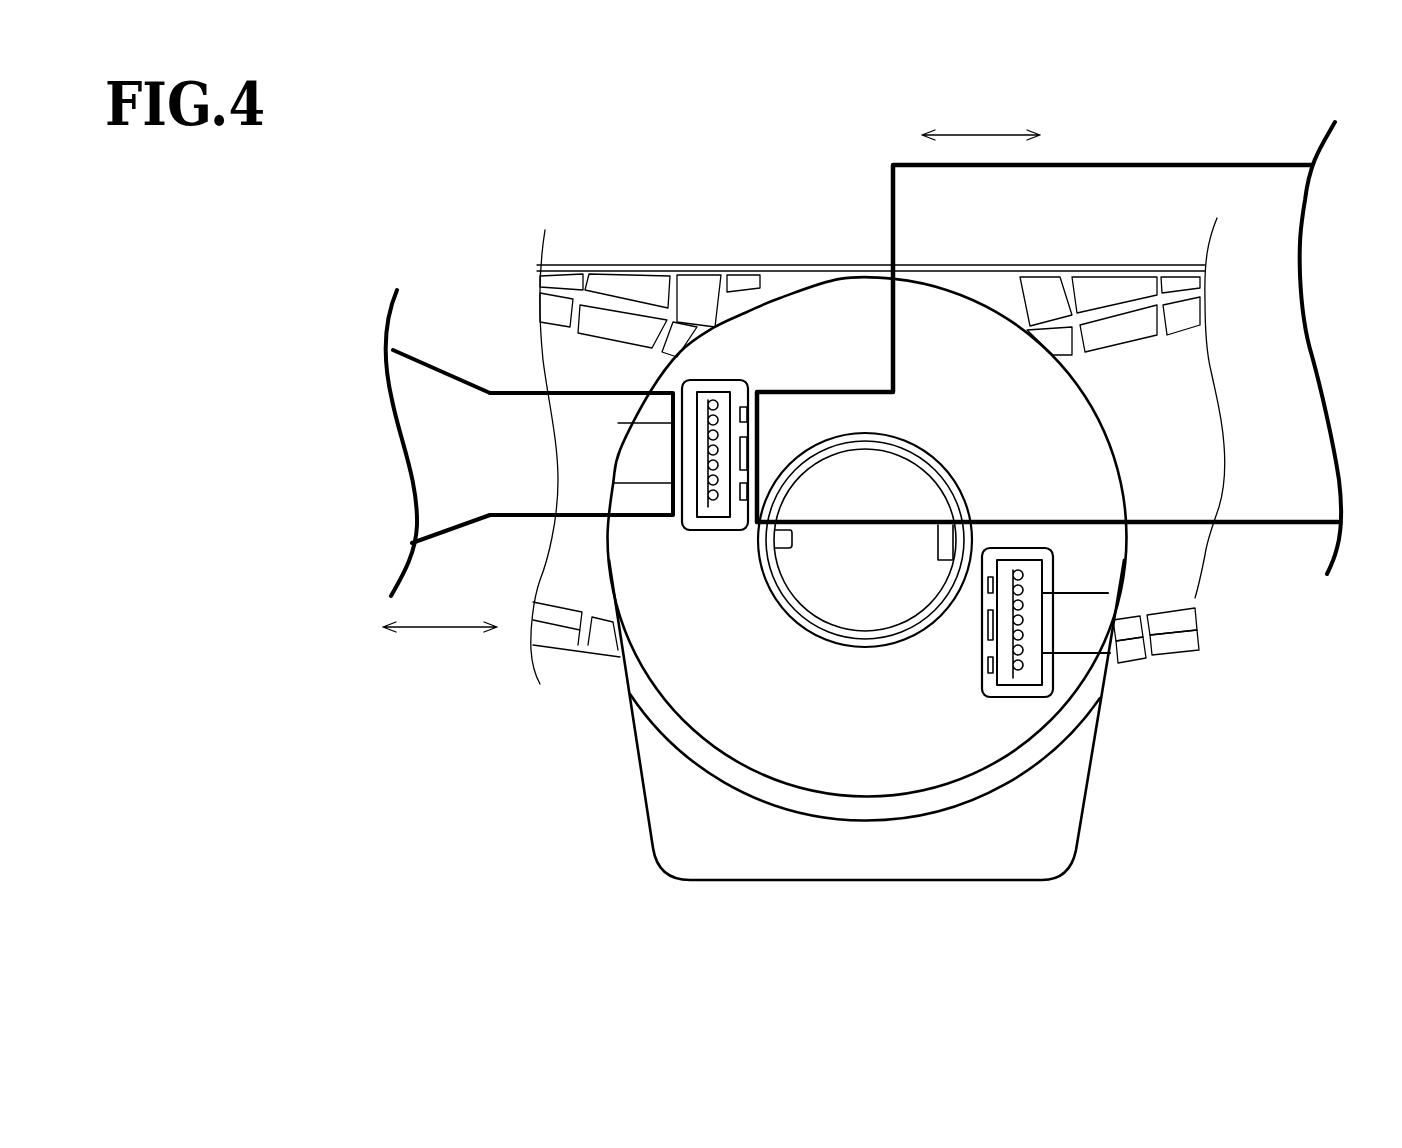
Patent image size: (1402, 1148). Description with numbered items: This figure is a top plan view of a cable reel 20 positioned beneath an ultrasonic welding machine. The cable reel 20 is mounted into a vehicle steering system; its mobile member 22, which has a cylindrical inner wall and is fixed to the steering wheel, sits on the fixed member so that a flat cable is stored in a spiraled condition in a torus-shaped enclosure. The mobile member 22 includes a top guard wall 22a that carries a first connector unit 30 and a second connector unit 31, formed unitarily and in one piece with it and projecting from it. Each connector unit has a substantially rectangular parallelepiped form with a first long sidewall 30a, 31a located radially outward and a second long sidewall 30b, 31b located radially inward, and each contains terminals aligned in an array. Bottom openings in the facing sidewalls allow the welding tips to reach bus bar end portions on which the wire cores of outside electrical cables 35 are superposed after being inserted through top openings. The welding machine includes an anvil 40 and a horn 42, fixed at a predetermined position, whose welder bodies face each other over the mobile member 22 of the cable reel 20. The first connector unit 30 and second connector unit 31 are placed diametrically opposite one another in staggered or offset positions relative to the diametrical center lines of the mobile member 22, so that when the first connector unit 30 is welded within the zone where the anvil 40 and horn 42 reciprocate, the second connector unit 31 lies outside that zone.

The cable reel 20 is at (1100, 778).
The mobile member 22 is at (718, 782).
The top guard wall 22a is at (690, 680).
The first connector unit 30 is at (1110, 766).
The first long sidewall 30a is at (1150, 618).
The second long sidewall 30b is at (980, 694).
The second connector unit 31 is at (753, 342).
The first long sidewall 31a is at (690, 396).
The second long sidewall 31b is at (750, 395).
The electrical cable 35 is at (625, 625).
The anvil 40 is at (1117, 194).
The horn 42 is at (452, 384).